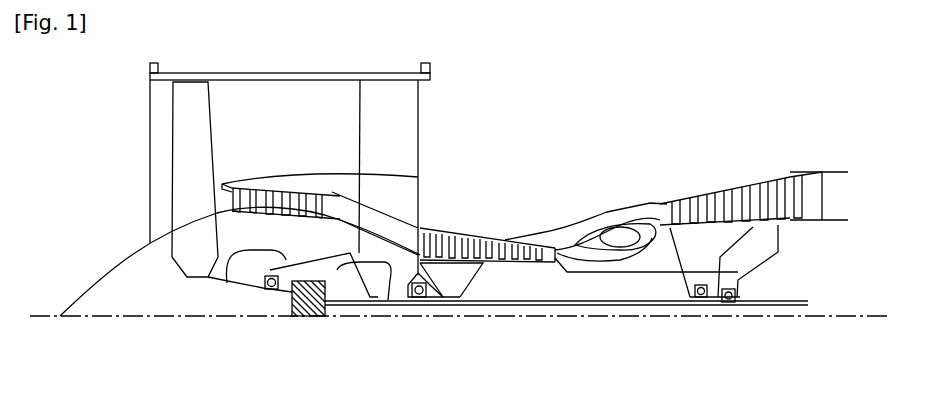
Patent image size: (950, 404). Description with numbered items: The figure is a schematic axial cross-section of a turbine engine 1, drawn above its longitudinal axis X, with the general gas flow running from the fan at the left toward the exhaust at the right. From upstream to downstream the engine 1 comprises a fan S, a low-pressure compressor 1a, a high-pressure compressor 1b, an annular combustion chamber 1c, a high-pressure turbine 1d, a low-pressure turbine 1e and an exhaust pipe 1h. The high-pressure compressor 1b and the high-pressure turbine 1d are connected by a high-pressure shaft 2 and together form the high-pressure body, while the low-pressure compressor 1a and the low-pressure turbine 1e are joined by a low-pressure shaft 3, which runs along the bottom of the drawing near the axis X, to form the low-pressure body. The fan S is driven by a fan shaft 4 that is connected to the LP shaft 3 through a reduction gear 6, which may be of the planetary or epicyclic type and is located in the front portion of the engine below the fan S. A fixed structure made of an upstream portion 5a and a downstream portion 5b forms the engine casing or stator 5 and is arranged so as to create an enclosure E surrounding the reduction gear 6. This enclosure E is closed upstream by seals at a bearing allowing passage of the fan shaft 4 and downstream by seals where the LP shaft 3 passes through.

The turbine engine 1 is at (538, 142).
The low-pressure compressor 1a is at (246, 186).
The high-pressure compressor 1b is at (456, 228).
The annular combustion chamber 1c is at (610, 232).
The high-pressure turbine 1d is at (676, 276).
The low-pressure turbine 1e is at (778, 188).
The exhaust pipe 1h is at (832, 192).
The high-pressure shaft 2 is at (606, 274).
The low-pressure shaft 3 is at (516, 306).
The fan shaft 4 is at (260, 292).
The stator 5 is at (338, 250).
The upstream portion 5a is at (229, 285).
The downstream portion 5b is at (385, 285).
The reduction gear 6 is at (300, 300).
The enclosure E is at (337, 268).
The fan S is at (186, 133).
The axis X is at (40, 317).